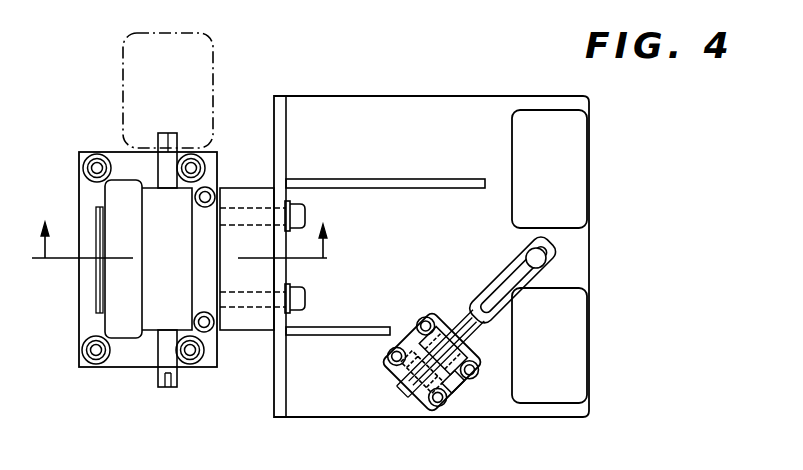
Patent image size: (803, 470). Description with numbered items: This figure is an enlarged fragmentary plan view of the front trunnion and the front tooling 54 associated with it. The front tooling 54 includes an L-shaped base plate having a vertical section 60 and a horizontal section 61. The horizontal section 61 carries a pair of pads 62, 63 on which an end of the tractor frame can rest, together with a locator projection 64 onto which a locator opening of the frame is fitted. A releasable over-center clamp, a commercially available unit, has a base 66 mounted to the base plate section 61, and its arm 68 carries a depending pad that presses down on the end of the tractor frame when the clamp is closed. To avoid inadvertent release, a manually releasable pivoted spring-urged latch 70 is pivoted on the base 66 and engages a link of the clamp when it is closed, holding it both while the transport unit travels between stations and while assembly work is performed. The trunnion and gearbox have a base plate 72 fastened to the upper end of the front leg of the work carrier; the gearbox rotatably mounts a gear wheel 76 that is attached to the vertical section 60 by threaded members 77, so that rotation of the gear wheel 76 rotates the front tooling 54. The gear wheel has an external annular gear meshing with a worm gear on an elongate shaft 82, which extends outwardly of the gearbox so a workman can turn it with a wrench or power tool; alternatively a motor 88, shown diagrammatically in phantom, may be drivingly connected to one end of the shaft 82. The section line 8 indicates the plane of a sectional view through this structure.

The section line 8- 8 is at (182, 254).
The front tooling 54 is at (414, 268).
The vertical section 60 is at (273, 405).
The horizontal section 61 is at (366, 400).
The pad 62 is at (585, 175).
The pad 63 is at (592, 360).
The locator projection 64 is at (548, 252).
The base 66 is at (424, 404).
The arm 68 is at (497, 270).
The latch 70 is at (463, 388).
The base plate 72 is at (103, 366).
The gear wheel 76 is at (267, 333).
The threaded members 77 is at (305, 211).
The elongate shaft 82 is at (158, 348).
The motor 88 is at (200, 68).